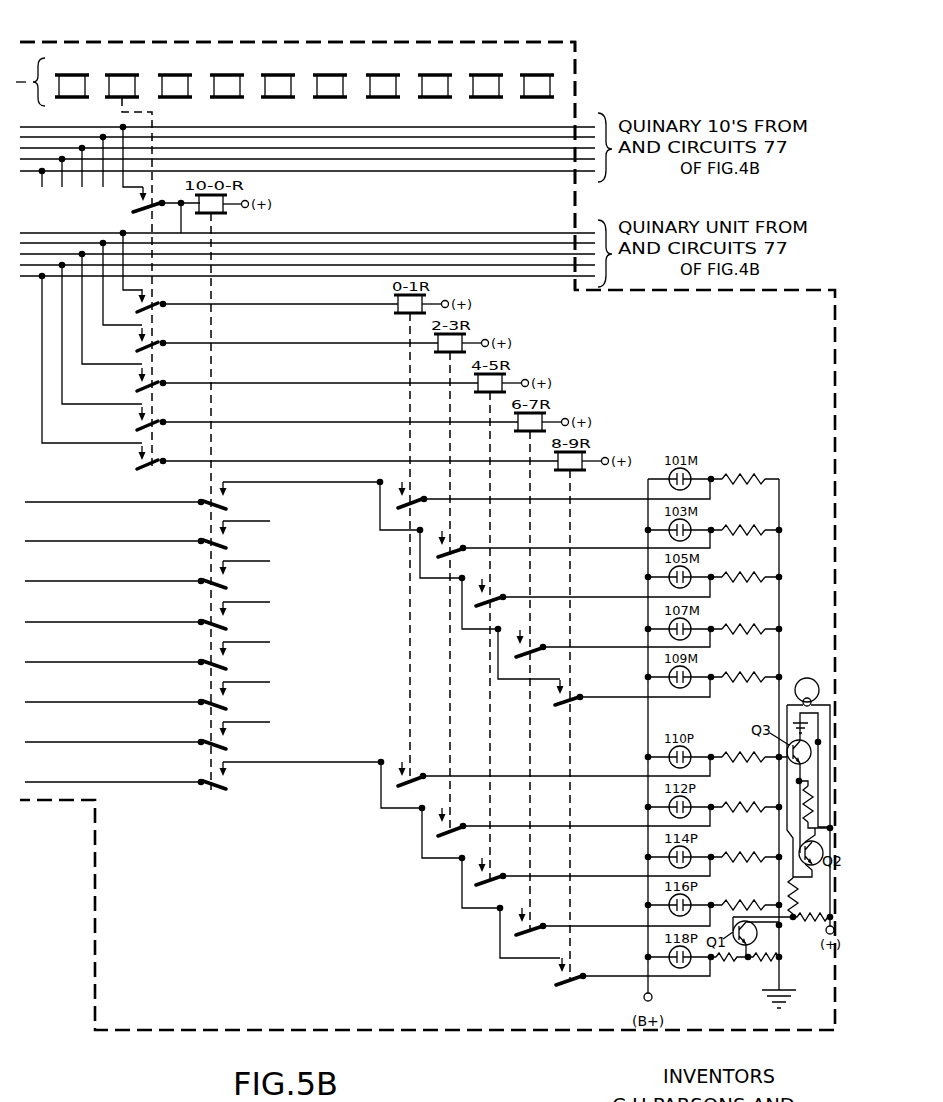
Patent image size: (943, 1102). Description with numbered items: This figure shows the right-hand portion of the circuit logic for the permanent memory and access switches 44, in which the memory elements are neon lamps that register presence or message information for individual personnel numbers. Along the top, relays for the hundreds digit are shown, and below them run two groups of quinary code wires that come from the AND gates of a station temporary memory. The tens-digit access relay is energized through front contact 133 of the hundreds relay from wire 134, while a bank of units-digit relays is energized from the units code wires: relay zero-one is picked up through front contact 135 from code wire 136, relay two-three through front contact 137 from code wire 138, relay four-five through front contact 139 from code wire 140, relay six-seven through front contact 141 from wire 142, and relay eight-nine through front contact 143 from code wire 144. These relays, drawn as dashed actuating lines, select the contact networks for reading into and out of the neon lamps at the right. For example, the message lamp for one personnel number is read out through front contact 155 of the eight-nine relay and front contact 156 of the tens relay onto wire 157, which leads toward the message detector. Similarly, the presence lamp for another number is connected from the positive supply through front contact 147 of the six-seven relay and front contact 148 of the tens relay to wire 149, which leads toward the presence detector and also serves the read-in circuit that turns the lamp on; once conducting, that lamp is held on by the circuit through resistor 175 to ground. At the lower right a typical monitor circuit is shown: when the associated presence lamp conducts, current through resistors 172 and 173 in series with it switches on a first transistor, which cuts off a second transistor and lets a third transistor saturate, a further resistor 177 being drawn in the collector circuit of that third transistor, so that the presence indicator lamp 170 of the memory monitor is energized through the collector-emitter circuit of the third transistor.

The permanent memory and access switches 44 is at (32, 42).
The front contact of relay 100R 133 is at (133, 209).
The wire 134 is at (193, 126).
The front contact of relay 100R 135 is at (161, 311).
The code wire 136 is at (272, 233).
The front contact of relay 100R 137 is at (161, 350).
The code wire 138 is at (313, 243).
The front contact 139 is at (161, 390).
The code wire 140 is at (367, 254).
The front contact 141 is at (161, 429).
The wire 142 is at (413, 265).
The front contact 143 is at (161, 468).
The code wire 144 is at (460, 276).
The front contact of relay 6-7R 147 is at (527, 933).
The front contact of relay 10-0-1R 148 is at (219, 787).
The wire 149 is at (122, 779).
The front contact of relay 8-9R 155 is at (574, 705).
The front contact of relay 10-0-1R 156 is at (225, 501).
The wire 157 is at (106, 501).
The presence indicator lamp 170 is at (810, 678).
The resistor 172 is at (721, 960).
The resistor 173 is at (764, 950).
The resistor 175 is at (740, 902).
The resistor 177 is at (805, 812).